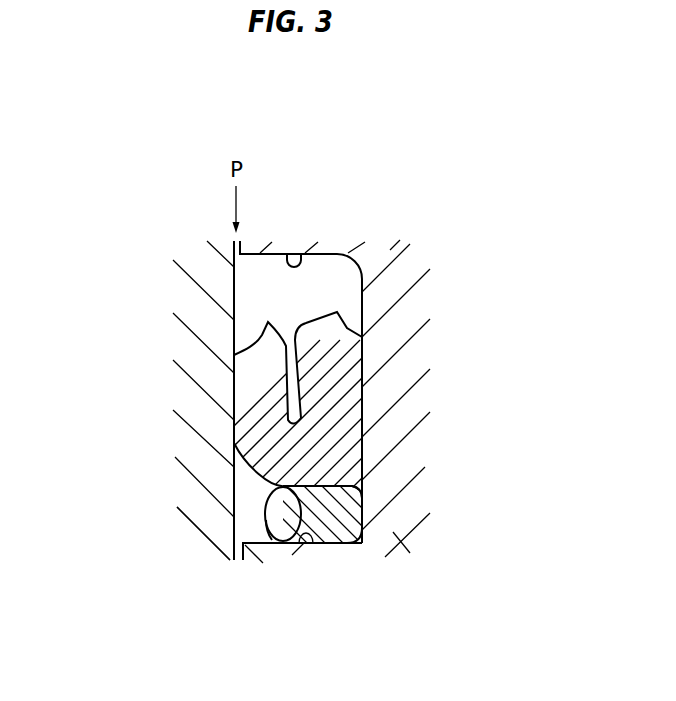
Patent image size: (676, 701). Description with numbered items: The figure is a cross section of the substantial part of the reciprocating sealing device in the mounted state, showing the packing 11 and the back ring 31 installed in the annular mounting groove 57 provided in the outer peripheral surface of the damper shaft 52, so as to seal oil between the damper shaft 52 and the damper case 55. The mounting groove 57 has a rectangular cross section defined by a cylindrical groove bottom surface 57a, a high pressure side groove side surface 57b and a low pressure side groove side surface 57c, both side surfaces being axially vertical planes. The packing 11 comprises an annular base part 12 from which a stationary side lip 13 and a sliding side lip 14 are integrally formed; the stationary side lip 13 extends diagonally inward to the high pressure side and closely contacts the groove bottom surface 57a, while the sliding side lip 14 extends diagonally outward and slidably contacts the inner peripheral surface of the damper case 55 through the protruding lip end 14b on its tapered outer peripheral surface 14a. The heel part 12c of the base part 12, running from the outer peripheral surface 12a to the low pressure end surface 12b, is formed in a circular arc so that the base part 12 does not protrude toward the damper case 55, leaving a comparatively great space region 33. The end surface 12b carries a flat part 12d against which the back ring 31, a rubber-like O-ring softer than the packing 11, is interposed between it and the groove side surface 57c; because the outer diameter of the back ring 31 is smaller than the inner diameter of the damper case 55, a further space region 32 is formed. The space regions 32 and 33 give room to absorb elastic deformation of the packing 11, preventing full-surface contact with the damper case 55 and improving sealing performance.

The packing 11 is at (331, 399).
The annular base part 12 is at (294, 541).
The outer peripheral surface 12a is at (234, 467).
The end surface 12b is at (268, 546).
The heel part 12c is at (234, 507).
The flat part 12d is at (292, 547).
The stationary side lip 13 is at (362, 337).
The sliding side lip 14 is at (253, 338).
The outer peripheral surface 14a is at (234, 388).
The lip end 14b is at (234, 355).
The back ring 31 is at (338, 550).
The space region 32 is at (213, 565).
The space region 33 is at (234, 490).
The damper shaft 52 is at (410, 553).
The damper case 55 is at (207, 527).
The mounting groove 57 is at (313, 287).
The groove bottom surface 57a is at (362, 405).
The groove side surface 57b is at (293, 252).
The groove side surface 57c is at (292, 552).